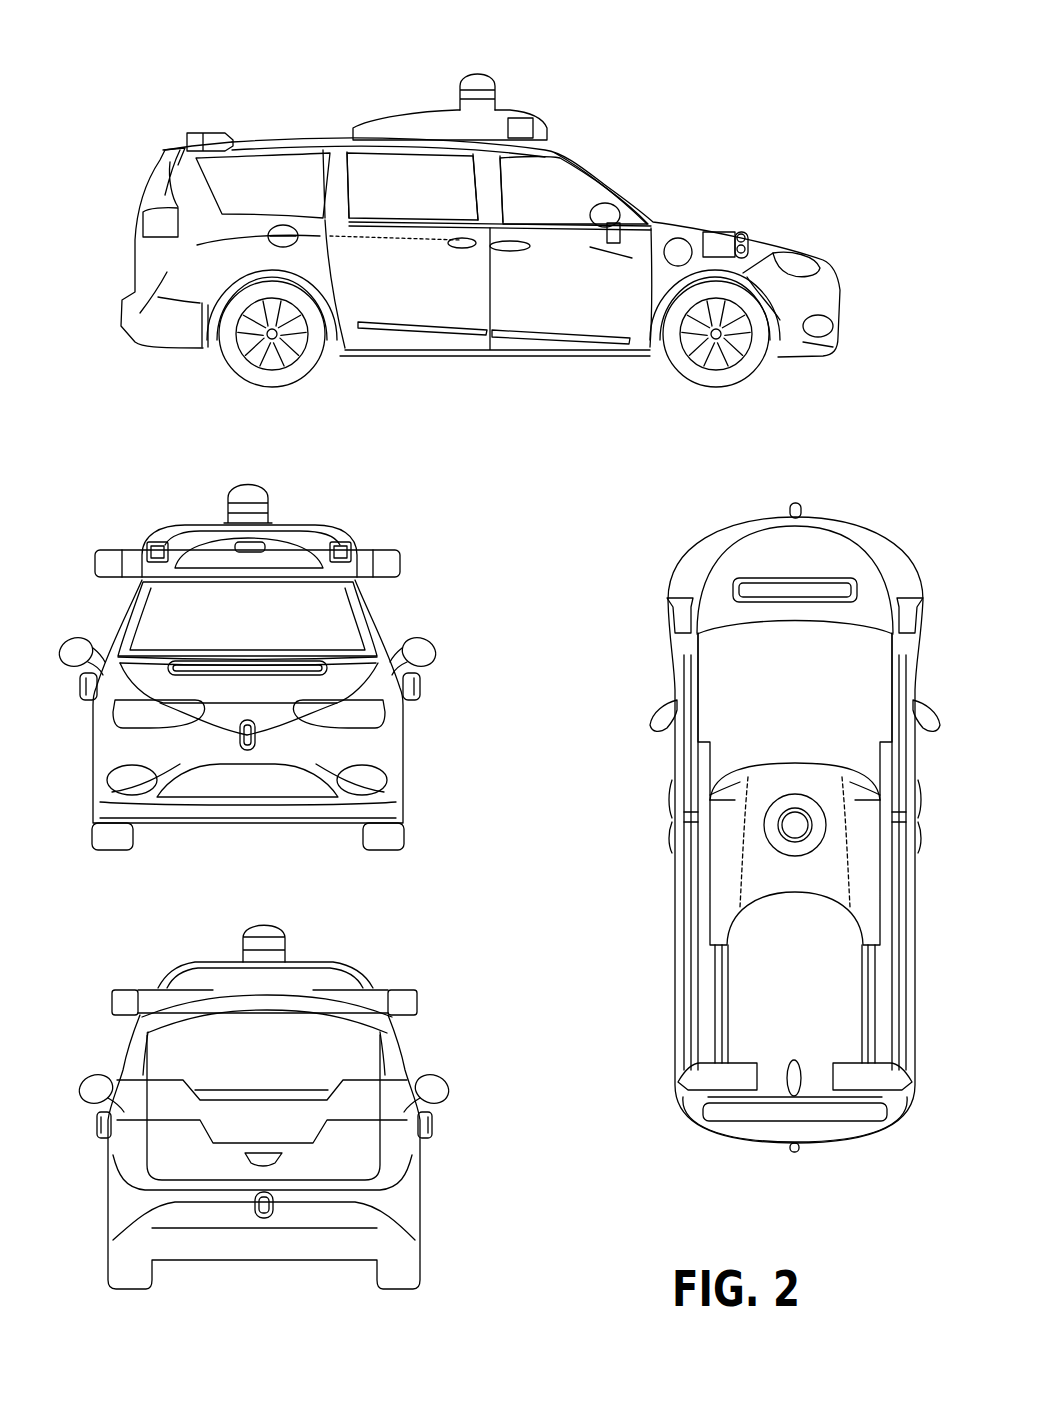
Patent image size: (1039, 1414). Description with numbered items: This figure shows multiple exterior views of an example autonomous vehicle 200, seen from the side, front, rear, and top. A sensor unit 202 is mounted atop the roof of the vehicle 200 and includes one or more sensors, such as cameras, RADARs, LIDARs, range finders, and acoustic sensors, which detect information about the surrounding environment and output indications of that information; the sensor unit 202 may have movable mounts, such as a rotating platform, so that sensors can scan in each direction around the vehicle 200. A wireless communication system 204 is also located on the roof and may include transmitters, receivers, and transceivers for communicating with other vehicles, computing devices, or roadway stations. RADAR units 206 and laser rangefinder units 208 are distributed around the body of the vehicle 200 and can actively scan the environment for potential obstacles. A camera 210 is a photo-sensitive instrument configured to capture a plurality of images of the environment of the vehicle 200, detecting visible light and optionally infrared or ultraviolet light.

The vehicle 200 is at (92, 70).
The sensor unit 202 is at (483, 70).
The wireless communication system 204 is at (792, 1058).
The RADAR units 206 is at (525, 118).
The laser rangefinder units 208 is at (744, 233).
The camera 210 is at (236, 542).